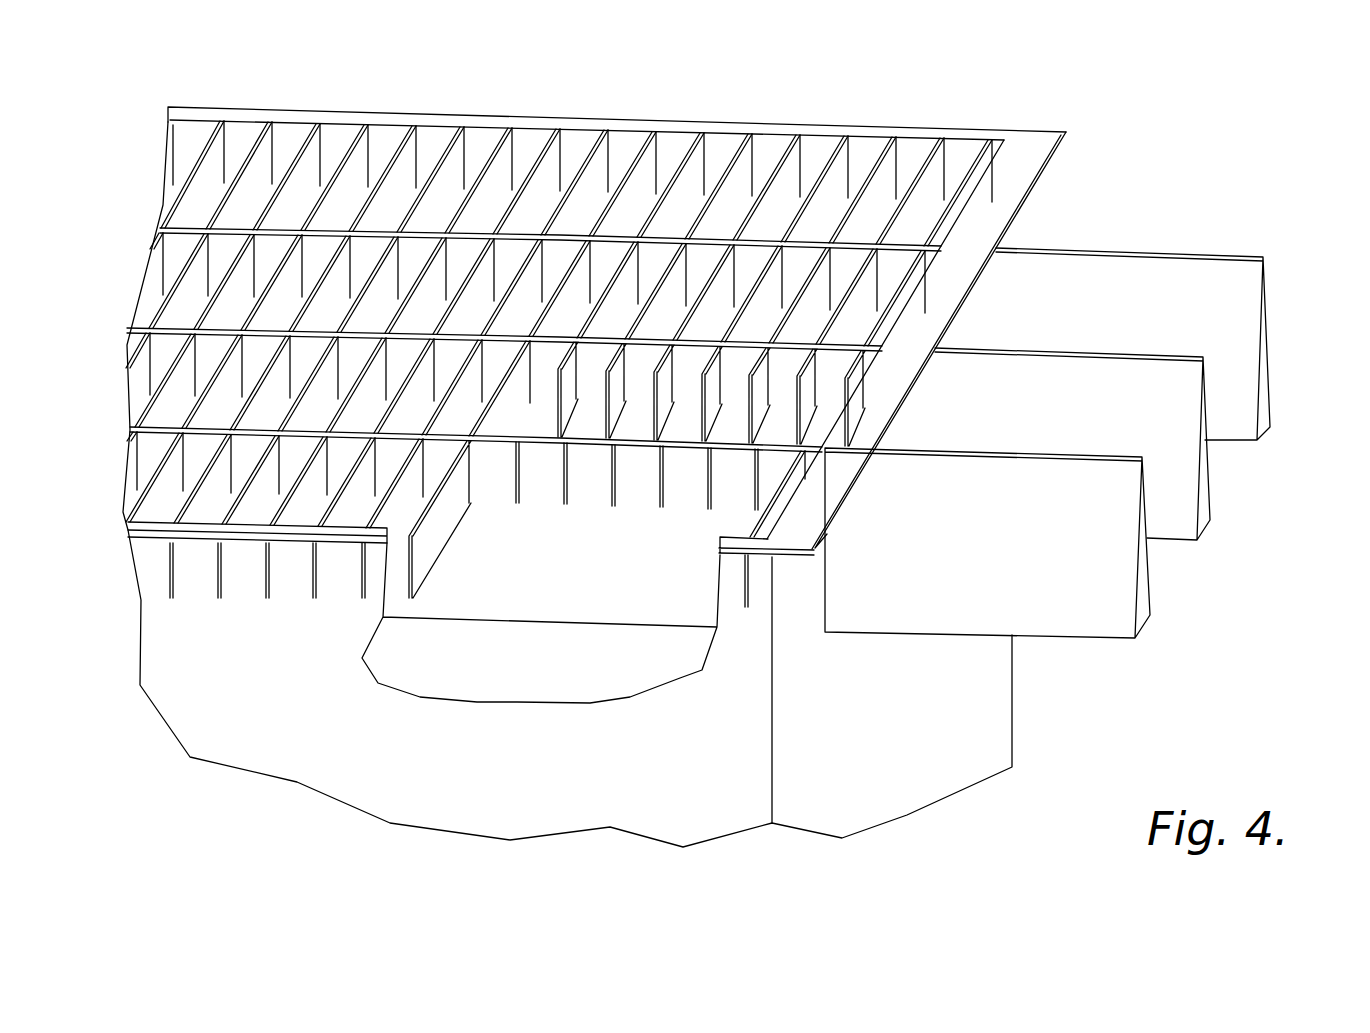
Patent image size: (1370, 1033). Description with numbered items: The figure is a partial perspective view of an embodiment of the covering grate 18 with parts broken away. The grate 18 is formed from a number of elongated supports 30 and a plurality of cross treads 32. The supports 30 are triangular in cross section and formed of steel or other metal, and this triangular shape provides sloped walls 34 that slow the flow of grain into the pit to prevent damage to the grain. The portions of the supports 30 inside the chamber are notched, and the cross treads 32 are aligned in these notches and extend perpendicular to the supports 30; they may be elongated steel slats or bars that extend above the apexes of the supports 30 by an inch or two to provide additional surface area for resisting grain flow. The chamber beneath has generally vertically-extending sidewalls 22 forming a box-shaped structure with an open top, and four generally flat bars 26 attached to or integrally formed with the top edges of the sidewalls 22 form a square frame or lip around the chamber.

The grate 18 is at (707, 462).
The sidewalls 22 is at (985, 710).
The flat bars 26 is at (1018, 188).
The supports 30 is at (1247, 383).
The cross treads 32 is at (928, 158).
The sloped walls 34 is at (793, 358).